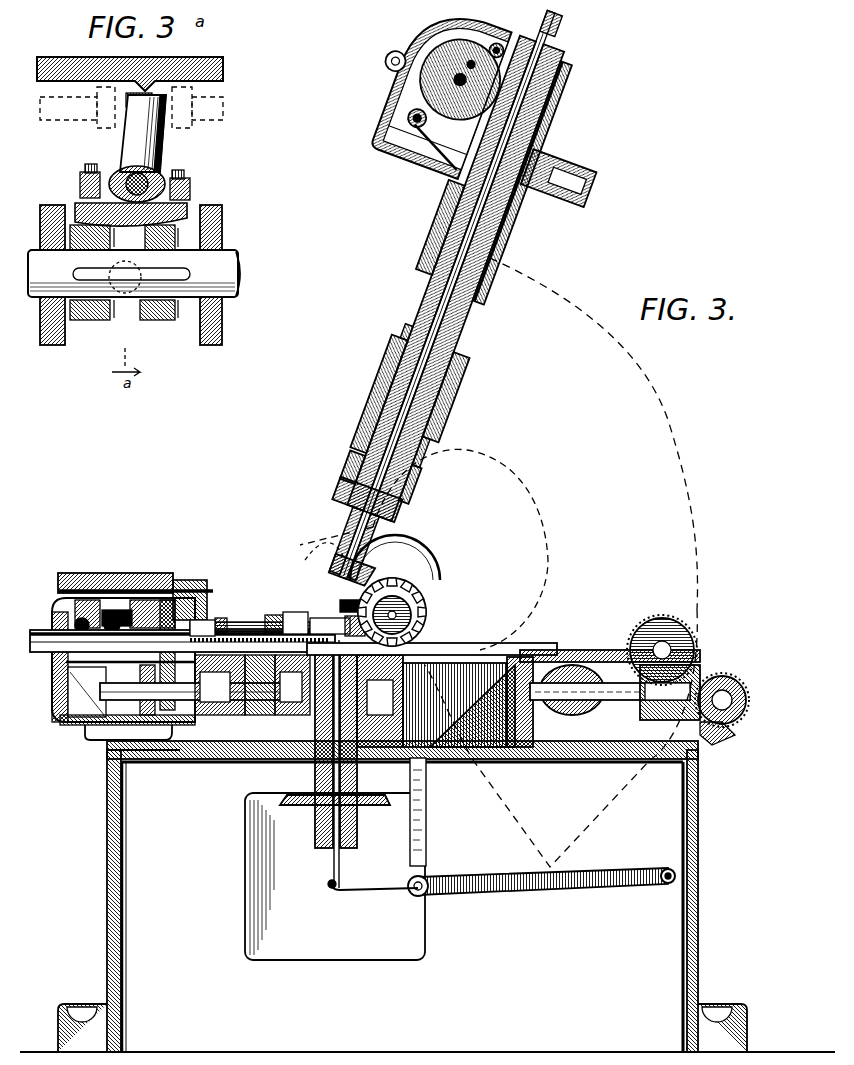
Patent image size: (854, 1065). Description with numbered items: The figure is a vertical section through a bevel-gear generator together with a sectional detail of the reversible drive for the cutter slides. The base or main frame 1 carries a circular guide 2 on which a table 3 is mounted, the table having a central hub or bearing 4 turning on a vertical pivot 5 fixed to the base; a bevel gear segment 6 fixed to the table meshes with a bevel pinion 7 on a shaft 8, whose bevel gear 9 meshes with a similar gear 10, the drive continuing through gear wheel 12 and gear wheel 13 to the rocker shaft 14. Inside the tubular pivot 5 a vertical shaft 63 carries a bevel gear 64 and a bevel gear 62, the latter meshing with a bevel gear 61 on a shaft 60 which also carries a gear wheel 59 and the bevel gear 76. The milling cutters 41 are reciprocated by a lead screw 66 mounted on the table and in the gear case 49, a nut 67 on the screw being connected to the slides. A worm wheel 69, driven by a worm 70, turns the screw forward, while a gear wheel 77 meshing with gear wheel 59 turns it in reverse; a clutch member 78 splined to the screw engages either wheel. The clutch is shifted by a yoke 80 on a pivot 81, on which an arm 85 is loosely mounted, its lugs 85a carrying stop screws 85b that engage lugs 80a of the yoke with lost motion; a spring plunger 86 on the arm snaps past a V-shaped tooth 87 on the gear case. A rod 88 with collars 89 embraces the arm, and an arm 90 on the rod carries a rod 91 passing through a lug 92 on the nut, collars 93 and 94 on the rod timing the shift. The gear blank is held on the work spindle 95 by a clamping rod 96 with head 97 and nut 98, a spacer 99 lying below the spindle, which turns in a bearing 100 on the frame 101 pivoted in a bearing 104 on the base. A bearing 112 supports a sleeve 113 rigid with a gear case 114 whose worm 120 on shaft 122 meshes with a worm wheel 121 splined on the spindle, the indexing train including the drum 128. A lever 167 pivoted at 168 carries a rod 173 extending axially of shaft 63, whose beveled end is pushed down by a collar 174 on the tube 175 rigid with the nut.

In FIG. 3, the base or main frame 1 is at (427, 896).
In FIG. 3, the circular guide 2 is at (186, 752).
In FIG. 3, the table 3 is at (213, 752).
In FIG. 3, the central hub or bearing 4 is at (366, 700).
In FIG. 3, the vertical pivot 5 is at (358, 758).
In FIG. 3, the bevel gear segment 6 is at (540, 670).
In FIG. 3, the bevel pinion 7 is at (565, 715).
In FIG. 3, the shaft 8 is at (570, 748).
In FIG. 3, the bevel gear 9 is at (622, 748).
In FIG. 3, the bevel gear 10 is at (598, 662).
In FIG. 3, the gear wheel 12 is at (666, 630).
In FIG. 3, the gear wheel 13 is at (730, 685).
In FIG. 3, the rocker shaft 14 is at (712, 735).
In FIG. 3, the milling cutters 41 is at (430, 590).
In FIG. 3, the gear case 49 is at (70, 728).
In FIG. 3, the gear wheel 59 is at (150, 752).
In FIG. 3, the shaft 60 is at (62, 718).
In FIG. 3, the bevel gear 61 is at (278, 752).
In FIG. 3, the bevel gear 62 is at (398, 672).
In FIG. 3, the vertical shaft 63 is at (314, 770).
In FIG. 3, the bevel gear 64 is at (365, 808).
In FIG. 3, the lead screw 66 is at (240, 622).
In FIG. 3, the nut 67 is at (252, 752).
In FIG. 3A, the worm wheel 69 is at (48, 340).
In FIG. 3, the worm wheel 69 is at (53, 684).
In FIG. 3, the worm 70 is at (52, 612).
In FIG. 3, the bevel gear 76 is at (110, 748).
In FIG. 3A, the gear wheel 77 is at (222, 333).
In FIG. 3, the gear wheel 77 is at (148, 592).
In FIG. 3A, the clutch member 78 is at (95, 322).
In FIG. 3, the clutch member 78 is at (70, 690).
In FIG. 3A, the yoke 80 is at (160, 322).
In FIG. 3A, the lugs 80a is at (238, 211).
In FIG. 3A, the pivot 81 is at (150, 185).
In FIG. 3A, the arm 85 is at (125, 148).
In FIG. 3A, the lugs 85a is at (210, 182).
In FIG. 3A, the stop screws 85b is at (236, 143).
In FIG. 3A, the spring plunger 86 is at (144, 100).
In FIG. 3A, the V-shaped tooth 87 is at (120, 75).
In FIG. 3A, the rod 88 is at (224, 103).
In FIG. 3, the rod 88 is at (62, 586).
In FIG. 3A, the collars 89 is at (96, 106).
In FIG. 3, the arm 90 is at (203, 622).
In FIG. 3, the rod 91 is at (270, 618).
In FIG. 3, the lug 92 is at (278, 612).
In FIG. 3, the collar 93 is at (226, 618).
In FIG. 3, the collar 94 is at (322, 618).
In FIG. 3, the work spindle 95 is at (420, 301).
In FIG. 3, the clamping rod 96 is at (470, 314).
In FIG. 3, the head 97 is at (479, 300).
In FIG. 3, the nut 98 is at (345, 602).
In FIG. 3, the spacer 99 is at (344, 509).
In FIG. 3, the bearing 100 is at (385, 388).
In FIG. 3, the support or frame 101 is at (672, 412).
In FIG. 3, the bearing 104 is at (320, 560).
In FIG. 3, the bearing 112 is at (543, 190).
In FIG. 3, the sleeve 113 is at (511, 232).
In FIG. 3, the gear case 114 is at (472, 134).
In FIG. 3, the worm 120 is at (416, 89).
In FIG. 3, the worm wheel 121 is at (581, 180).
In FIG. 3, the shaft 122 is at (362, 123).
In FIG. 3, the drum 128 is at (418, 73).
In FIG. 3, the lever 167 is at (508, 890).
In FIG. 3, the pivot 168 is at (414, 896).
In FIG. 3, the rod 173 is at (330, 865).
In FIG. 3, the collar 174 is at (345, 617).
In FIG. 3, the tube 175 is at (440, 652).